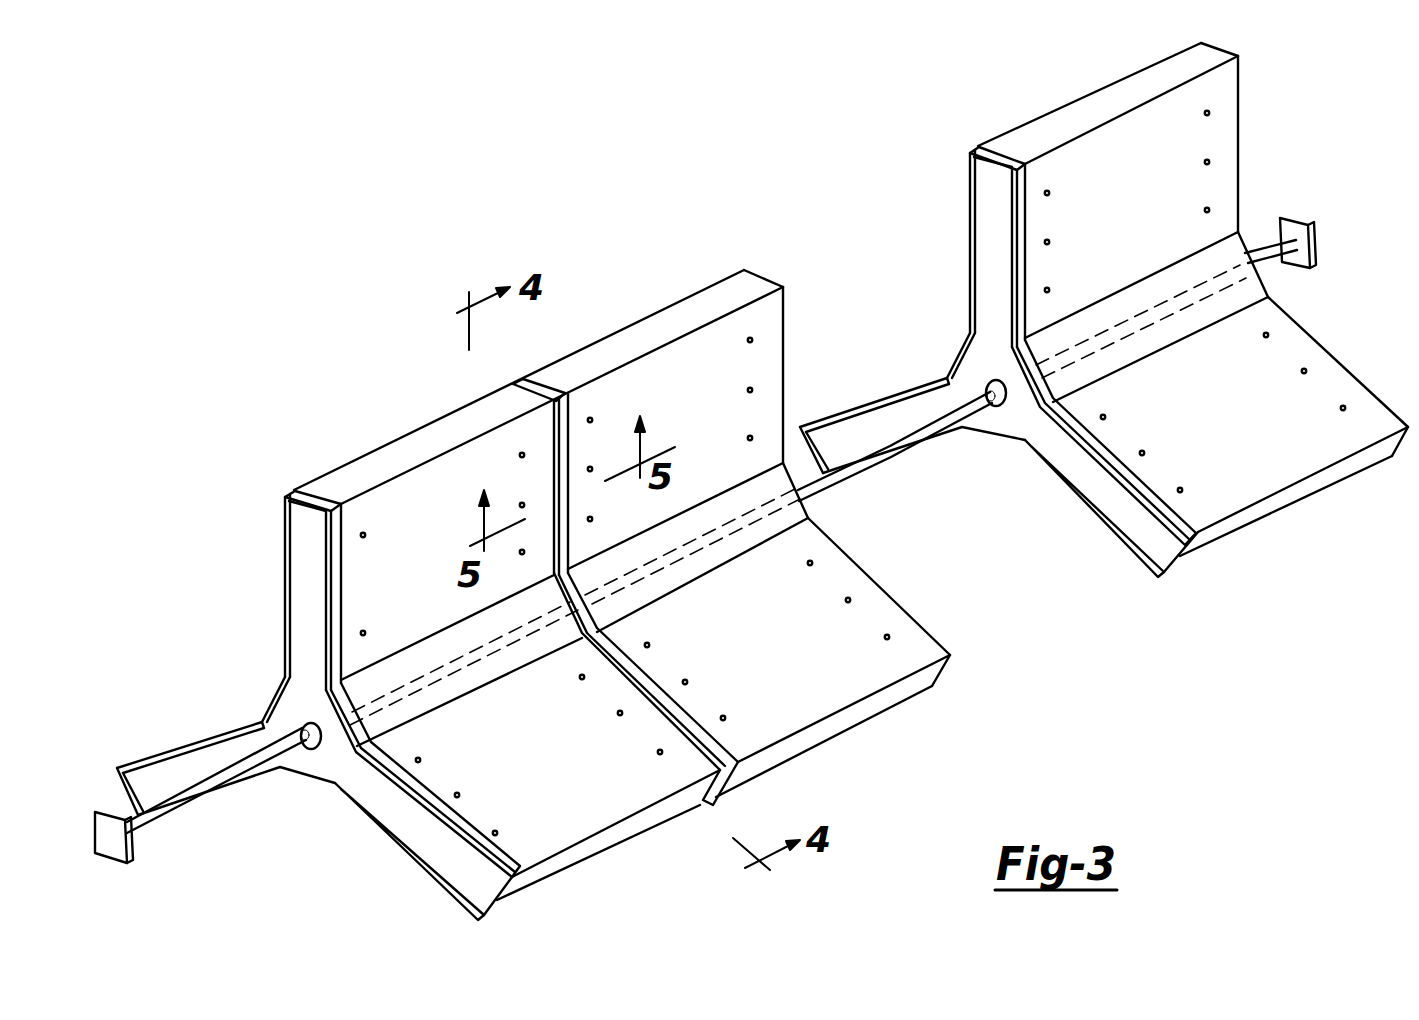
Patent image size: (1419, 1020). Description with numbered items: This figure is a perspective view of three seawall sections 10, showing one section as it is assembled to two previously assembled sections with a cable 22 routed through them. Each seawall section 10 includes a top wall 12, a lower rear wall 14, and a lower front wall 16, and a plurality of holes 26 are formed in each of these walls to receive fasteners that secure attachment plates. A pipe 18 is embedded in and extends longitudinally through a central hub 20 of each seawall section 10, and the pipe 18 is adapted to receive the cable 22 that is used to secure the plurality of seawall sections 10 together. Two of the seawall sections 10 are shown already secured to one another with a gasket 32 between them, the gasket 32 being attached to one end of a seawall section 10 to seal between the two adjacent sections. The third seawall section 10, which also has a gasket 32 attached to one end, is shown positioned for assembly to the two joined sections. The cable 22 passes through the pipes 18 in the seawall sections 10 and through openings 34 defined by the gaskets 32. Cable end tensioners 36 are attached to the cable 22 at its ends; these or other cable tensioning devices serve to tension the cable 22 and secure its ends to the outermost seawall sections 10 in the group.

The seawall section 10 is at (350, 432).
The top wall 12 is at (770, 314).
The lower rear wall 14 is at (160, 777).
The lower front wall 16 is at (553, 832).
The pipe 18 is at (300, 732).
The central hub 20 is at (797, 518).
The cable 22 is at (165, 811).
The holes 26 is at (362, 582).
The gasket 32 is at (452, 870).
The openings 34 is at (323, 752).
The cable end tensioners 36 is at (103, 843).